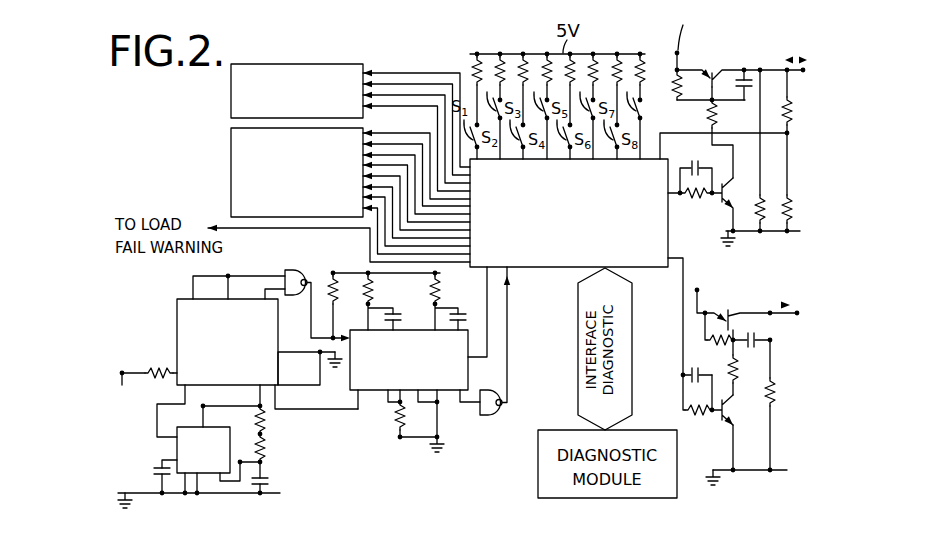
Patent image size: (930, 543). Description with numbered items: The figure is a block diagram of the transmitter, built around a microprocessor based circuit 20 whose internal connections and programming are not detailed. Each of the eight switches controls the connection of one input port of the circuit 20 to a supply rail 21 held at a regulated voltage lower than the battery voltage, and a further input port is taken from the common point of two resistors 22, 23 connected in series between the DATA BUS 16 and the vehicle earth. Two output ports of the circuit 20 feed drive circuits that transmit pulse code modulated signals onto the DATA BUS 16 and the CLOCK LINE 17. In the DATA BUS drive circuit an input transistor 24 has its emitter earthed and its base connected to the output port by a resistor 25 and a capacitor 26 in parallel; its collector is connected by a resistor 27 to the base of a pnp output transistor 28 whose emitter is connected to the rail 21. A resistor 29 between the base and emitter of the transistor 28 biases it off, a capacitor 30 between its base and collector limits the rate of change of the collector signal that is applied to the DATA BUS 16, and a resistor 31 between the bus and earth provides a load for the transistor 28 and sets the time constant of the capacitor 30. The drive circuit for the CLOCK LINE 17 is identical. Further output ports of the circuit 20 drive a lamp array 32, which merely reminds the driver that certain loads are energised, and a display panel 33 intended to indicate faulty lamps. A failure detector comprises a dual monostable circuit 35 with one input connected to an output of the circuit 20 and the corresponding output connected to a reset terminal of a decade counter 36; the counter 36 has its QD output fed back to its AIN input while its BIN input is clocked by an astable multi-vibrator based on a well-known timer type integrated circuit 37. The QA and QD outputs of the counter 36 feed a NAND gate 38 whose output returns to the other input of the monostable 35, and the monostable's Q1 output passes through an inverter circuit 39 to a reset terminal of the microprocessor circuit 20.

The DATA BUS 16 is at (804, 73).
The CLOCK LINE 17 is at (797, 317).
The microprocessor based circuit 20 is at (675, 244).
The supply rail 21 is at (677, 54).
The resistor 22 is at (791, 128).
The resistor 23 is at (785, 195).
The input transistor 24 is at (724, 206).
The resistor 25 is at (690, 200).
The capacitor 26 is at (690, 166).
The resistor 27 is at (708, 115).
The pnp output transistor 28 is at (718, 73).
The resistor 29 is at (675, 86).
The capacitor 30 is at (746, 97).
The resistor 31 is at (757, 195).
The lamp array 32 is at (357, 66).
The display panel 33 is at (231, 180).
The dual monostable circuit 35 is at (362, 414).
The decade counter 36 is at (177, 304).
The 555 type integrated circuit 37 is at (177, 453).
The NAND gate 38 is at (288, 272).
The inverter circuit 39 is at (490, 418).